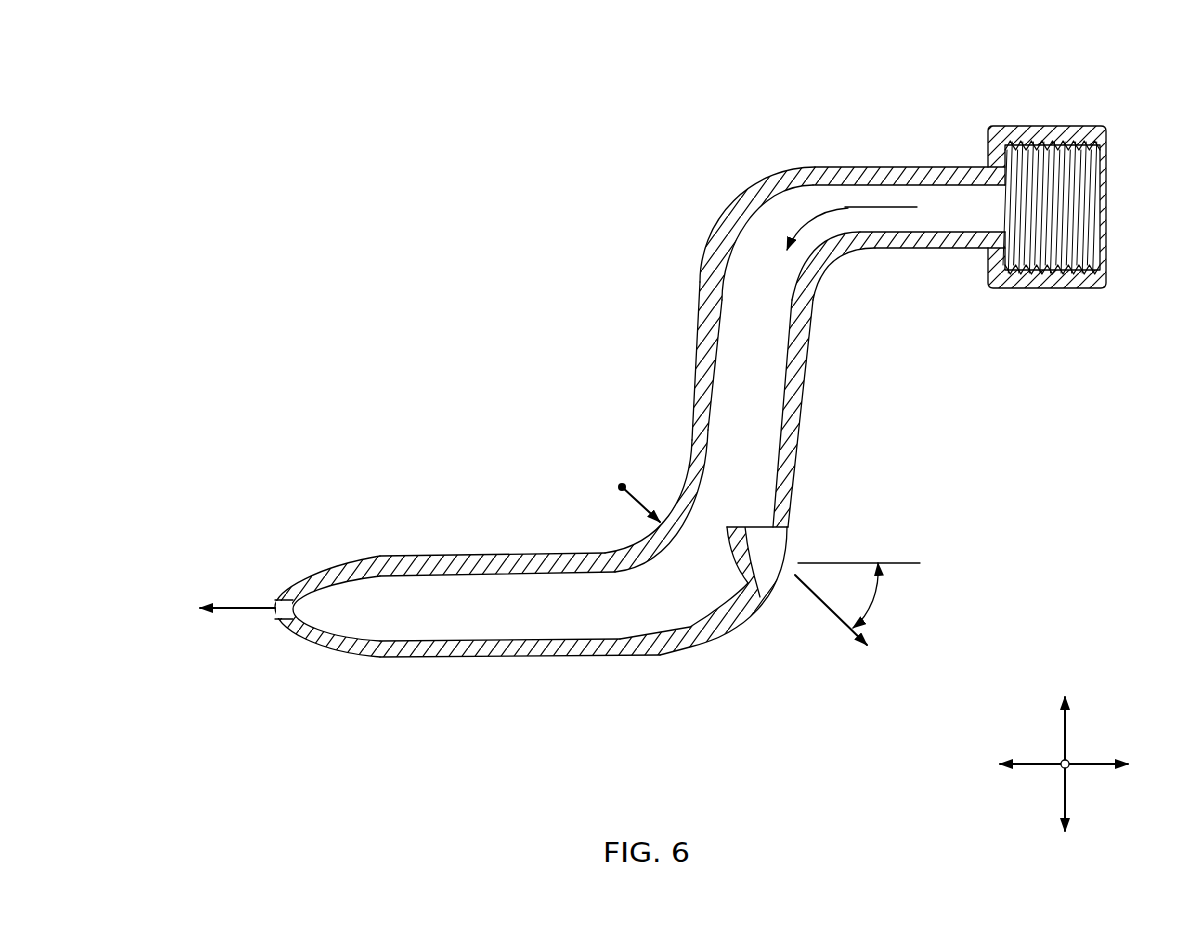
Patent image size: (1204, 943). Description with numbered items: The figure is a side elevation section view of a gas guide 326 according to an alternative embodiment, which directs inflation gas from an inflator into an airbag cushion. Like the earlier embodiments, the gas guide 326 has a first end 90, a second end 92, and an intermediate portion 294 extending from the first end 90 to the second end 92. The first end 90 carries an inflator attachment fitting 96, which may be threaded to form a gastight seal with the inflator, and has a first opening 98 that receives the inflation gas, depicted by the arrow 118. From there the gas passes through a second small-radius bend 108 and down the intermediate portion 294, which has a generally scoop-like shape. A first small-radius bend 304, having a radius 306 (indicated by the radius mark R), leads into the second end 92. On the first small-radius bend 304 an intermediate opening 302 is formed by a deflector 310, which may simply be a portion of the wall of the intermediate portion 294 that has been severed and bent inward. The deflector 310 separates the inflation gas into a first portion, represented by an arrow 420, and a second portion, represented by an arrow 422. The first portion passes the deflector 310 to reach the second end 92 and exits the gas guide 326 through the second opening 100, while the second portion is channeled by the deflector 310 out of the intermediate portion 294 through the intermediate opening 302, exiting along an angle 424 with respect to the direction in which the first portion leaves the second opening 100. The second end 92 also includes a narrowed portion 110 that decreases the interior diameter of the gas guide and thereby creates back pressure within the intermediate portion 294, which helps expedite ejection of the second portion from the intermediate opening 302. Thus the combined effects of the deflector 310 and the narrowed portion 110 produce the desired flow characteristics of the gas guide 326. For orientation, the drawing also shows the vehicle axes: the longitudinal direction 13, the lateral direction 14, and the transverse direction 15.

The gas guide 326 is at (535, 170).
The first end 90 is at (925, 148).
The inflator attachment fitting 96 is at (1050, 127).
The first opening 98 is at (1007, 183).
The second small-radius bend 108 is at (735, 202).
The arrow 118 is at (850, 207).
The intermediate portion 294 is at (675, 447).
The radius 306 is at (645, 503).
The bend radius R is at (629, 495).
The second end 92 is at (357, 540).
The narrowed portion 110 is at (293, 580).
The second opening 100 is at (275, 605).
The arrow 420 is at (225, 610).
The first small-radius bend 304 is at (755, 645).
The intermediate opening 302 is at (793, 540).
The deflector 310 is at (728, 560).
The arrow 422 is at (840, 620).
The angle 424 is at (872, 603).
The transverse direction 15 is at (1065, 737).
The lateral direction 14 is at (1060, 767).
The longitudinal direction 13 is at (1097, 767).